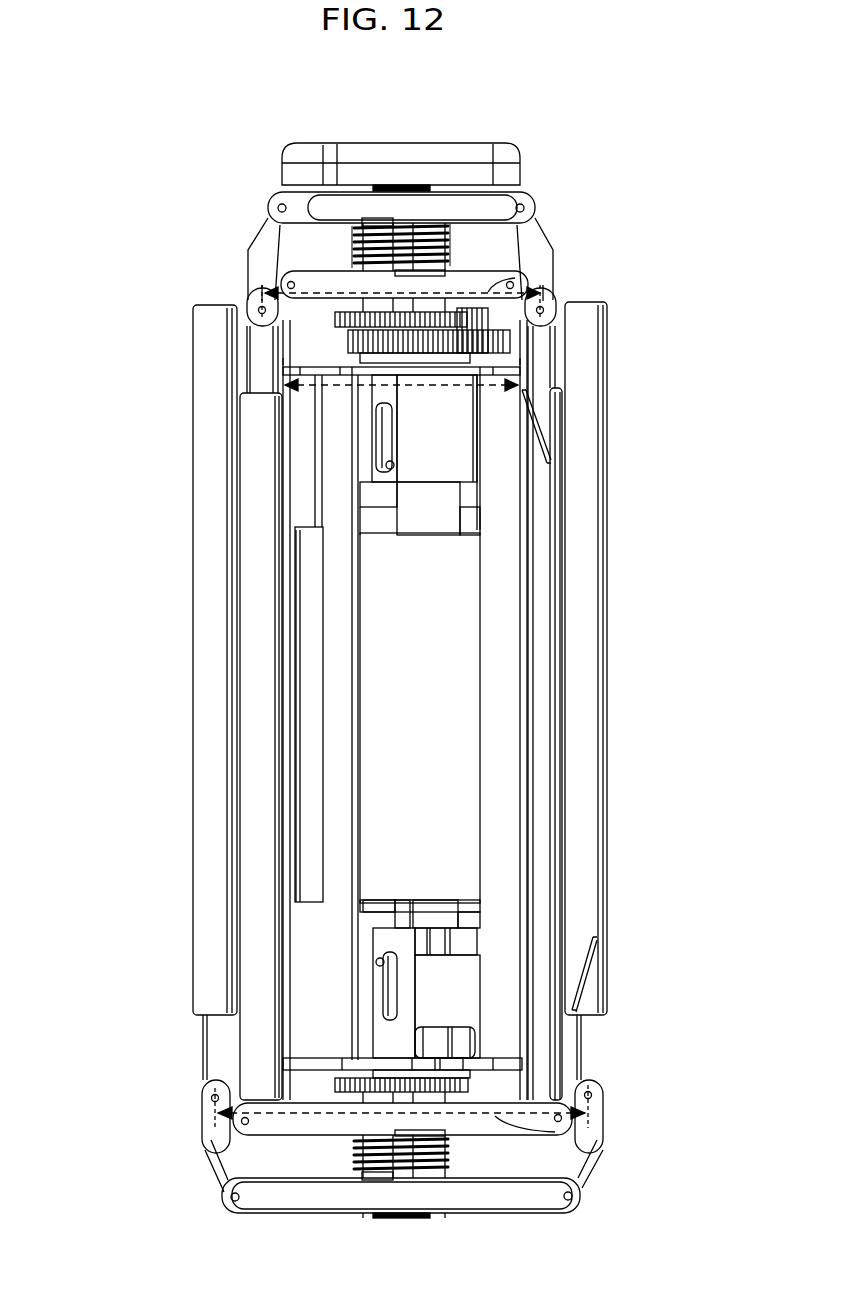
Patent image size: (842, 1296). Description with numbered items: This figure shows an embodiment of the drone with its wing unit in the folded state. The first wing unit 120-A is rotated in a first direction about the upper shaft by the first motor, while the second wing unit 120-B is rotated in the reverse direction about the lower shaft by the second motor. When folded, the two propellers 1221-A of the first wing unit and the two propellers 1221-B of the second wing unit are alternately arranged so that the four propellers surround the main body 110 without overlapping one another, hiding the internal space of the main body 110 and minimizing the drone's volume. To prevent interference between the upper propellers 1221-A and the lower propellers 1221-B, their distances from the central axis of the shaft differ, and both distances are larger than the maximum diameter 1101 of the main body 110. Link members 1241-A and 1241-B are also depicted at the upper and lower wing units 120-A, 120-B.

The first wing unit 120-A is at (300, 206).
The second wing unit 120-B is at (265, 1198).
The first link bar 1241-A is at (488, 292).
The second link bar 1241-B is at (495, 1116).
The propellers of the first wing unit 1221-A is at (258, 462).
The propellers of the second wing unit 1221-B is at (208, 868).
The maximum diameter of the main body 1101 is at (430, 390).
The main body 110 is at (497, 688).